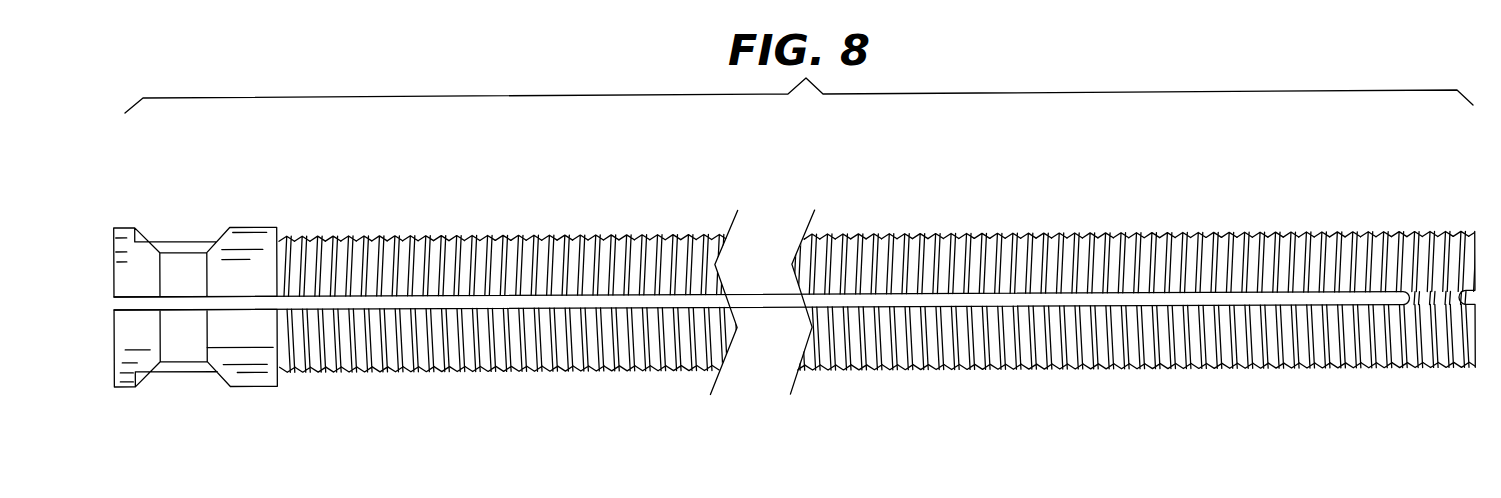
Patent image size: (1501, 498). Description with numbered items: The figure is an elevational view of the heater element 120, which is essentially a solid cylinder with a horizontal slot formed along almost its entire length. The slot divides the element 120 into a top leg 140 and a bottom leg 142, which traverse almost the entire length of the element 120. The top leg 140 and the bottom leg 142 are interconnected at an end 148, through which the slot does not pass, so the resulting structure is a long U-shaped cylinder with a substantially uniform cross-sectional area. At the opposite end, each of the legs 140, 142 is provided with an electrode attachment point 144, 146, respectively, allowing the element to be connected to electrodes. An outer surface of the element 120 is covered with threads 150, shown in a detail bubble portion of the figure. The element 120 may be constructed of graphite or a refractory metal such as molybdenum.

The heater element 120 is at (1030, 233).
The top leg 140 is at (607, 236).
The bottom leg 142 is at (632, 373).
The electrode attachment point 144 is at (216, 239).
The electrode attachment point 146 is at (223, 377).
The end 148 is at (1420, 232).
The threads 150 is at (910, 233).